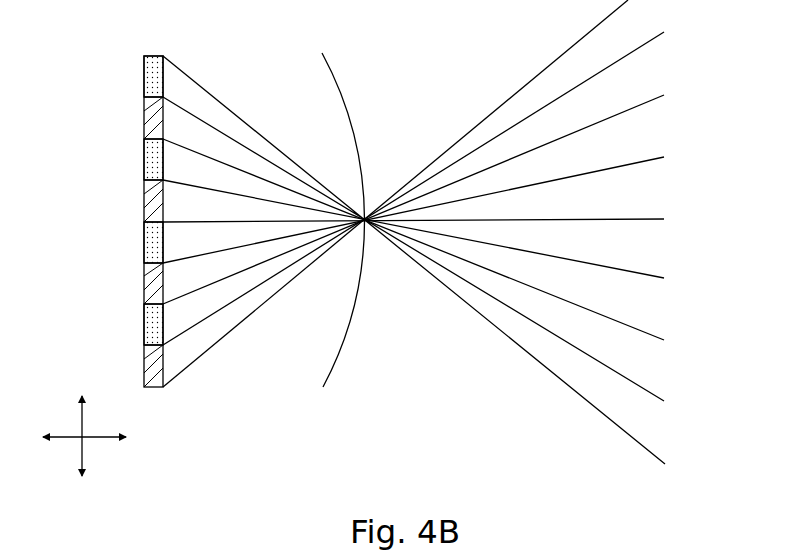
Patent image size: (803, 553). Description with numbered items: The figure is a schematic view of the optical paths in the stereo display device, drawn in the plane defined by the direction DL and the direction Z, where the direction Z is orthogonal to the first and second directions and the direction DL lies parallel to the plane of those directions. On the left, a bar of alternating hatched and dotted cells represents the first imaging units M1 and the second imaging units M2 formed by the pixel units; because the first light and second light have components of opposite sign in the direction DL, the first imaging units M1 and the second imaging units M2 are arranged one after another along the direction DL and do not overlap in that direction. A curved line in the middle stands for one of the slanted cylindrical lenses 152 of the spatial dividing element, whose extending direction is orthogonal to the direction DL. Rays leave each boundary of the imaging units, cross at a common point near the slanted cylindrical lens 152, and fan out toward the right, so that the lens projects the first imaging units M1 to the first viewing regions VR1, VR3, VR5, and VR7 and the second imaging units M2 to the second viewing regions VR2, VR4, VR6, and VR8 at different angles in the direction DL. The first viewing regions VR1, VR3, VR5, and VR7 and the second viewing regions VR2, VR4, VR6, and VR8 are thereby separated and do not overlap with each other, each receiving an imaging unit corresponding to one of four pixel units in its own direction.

The first imaging units M1 is at (144, 118).
The second imaging units M2 is at (144, 75).
The slanted cylindrical lenses 152 is at (339, 85).
The first viewing region VR1 is at (427, 193).
The second viewing region VR2 is at (427, 188).
The first viewing region VR3 is at (427, 199).
The second viewing region VR4 is at (427, 210).
The first viewing region VR5 is at (427, 238).
The second viewing region VR6 is at (427, 247).
The first viewing region VR7 is at (427, 259).
The second viewing region VR8 is at (427, 260).
The direction DL is at (86, 421).
The direction Z is at (96, 435).